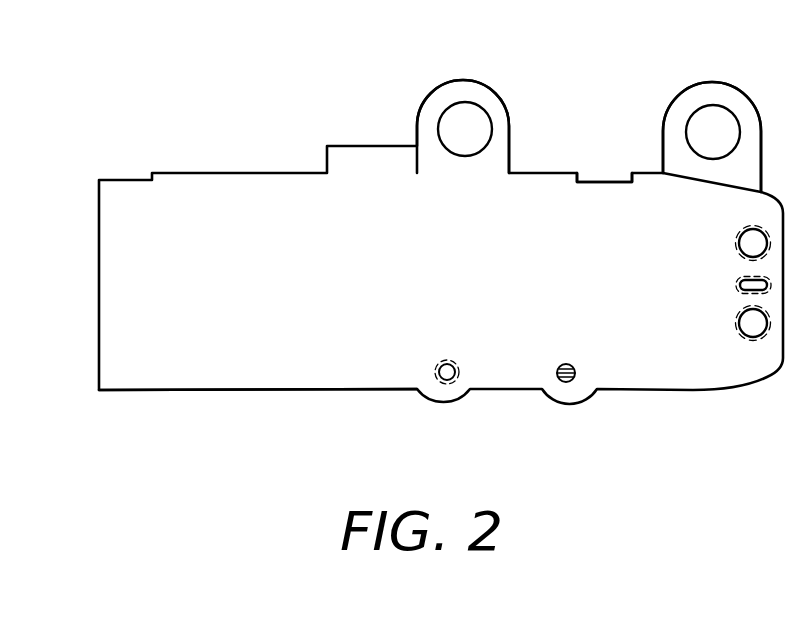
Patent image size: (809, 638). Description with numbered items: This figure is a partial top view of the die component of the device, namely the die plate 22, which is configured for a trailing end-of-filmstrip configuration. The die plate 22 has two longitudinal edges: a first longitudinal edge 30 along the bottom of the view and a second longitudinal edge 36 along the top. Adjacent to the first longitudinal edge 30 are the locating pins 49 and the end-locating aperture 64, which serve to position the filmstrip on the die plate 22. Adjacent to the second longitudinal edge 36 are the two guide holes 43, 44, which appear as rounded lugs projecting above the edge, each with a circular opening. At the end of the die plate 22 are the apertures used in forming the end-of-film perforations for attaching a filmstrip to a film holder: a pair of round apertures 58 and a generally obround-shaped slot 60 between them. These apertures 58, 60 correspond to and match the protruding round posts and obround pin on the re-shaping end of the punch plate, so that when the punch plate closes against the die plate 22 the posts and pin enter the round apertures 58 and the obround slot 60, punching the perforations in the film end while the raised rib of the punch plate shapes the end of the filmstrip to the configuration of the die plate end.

The die plate 22 is at (247, 164).
The first longitudinal edge 30 is at (300, 391).
The second longitudinal edge 36 is at (556, 172).
The guide hole 43 is at (475, 118).
The guide hole 44 is at (710, 112).
The locating pins 49 is at (575, 380).
The round apertures 58 is at (739, 235).
The obround-shaped slot 60 is at (738, 284).
The end-locating aperture 64 is at (453, 380).